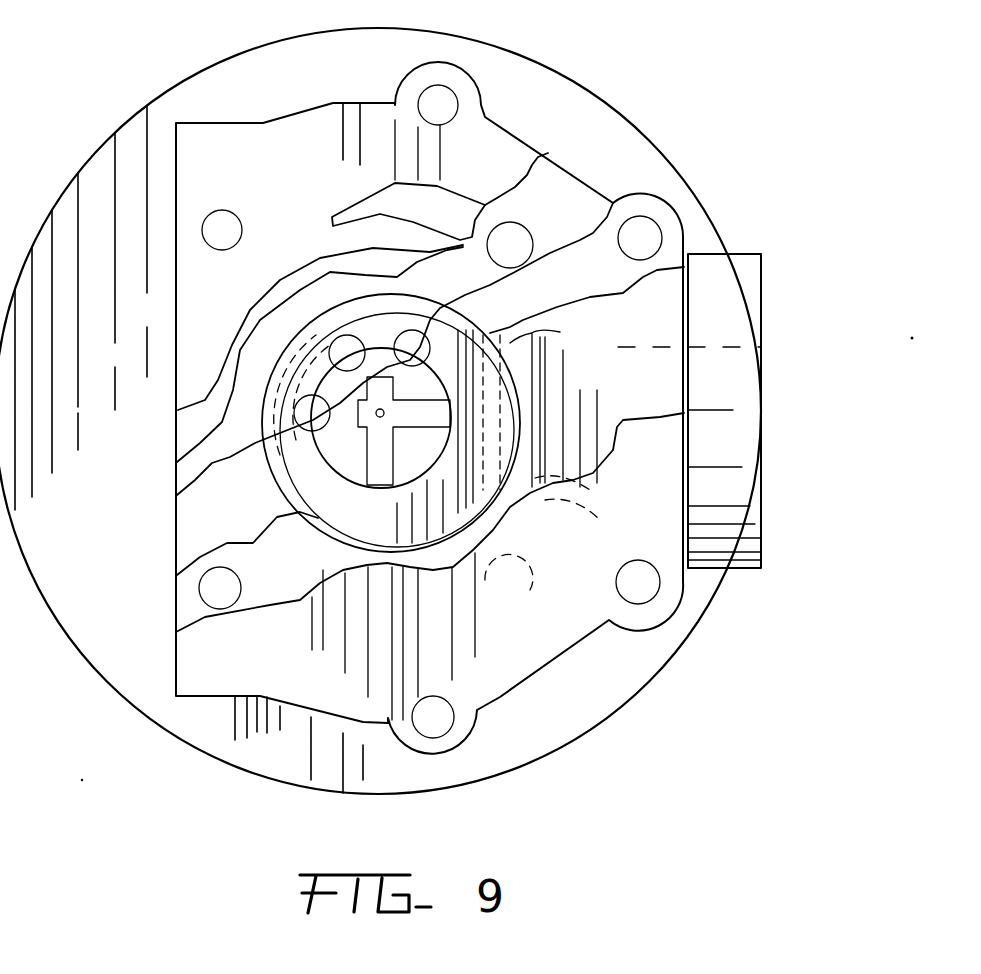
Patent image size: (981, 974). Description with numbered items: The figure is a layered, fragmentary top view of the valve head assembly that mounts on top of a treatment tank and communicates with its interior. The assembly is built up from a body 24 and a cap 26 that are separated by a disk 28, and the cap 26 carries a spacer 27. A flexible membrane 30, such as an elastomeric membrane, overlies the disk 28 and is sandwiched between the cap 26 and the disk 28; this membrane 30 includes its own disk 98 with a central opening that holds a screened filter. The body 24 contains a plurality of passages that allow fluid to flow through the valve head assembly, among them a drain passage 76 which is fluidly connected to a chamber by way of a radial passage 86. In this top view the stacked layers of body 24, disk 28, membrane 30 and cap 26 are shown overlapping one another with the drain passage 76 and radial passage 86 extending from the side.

The body 24 is at (243, 90).
The cap 26 is at (503, 670).
The spacer 27 is at (657, 317).
The disk 28 is at (557, 187).
The flexible membrane 30 is at (598, 253).
The drain passage 76 is at (748, 410).
The radial passage 86 is at (762, 347).
The disk 98 is at (198, 547).